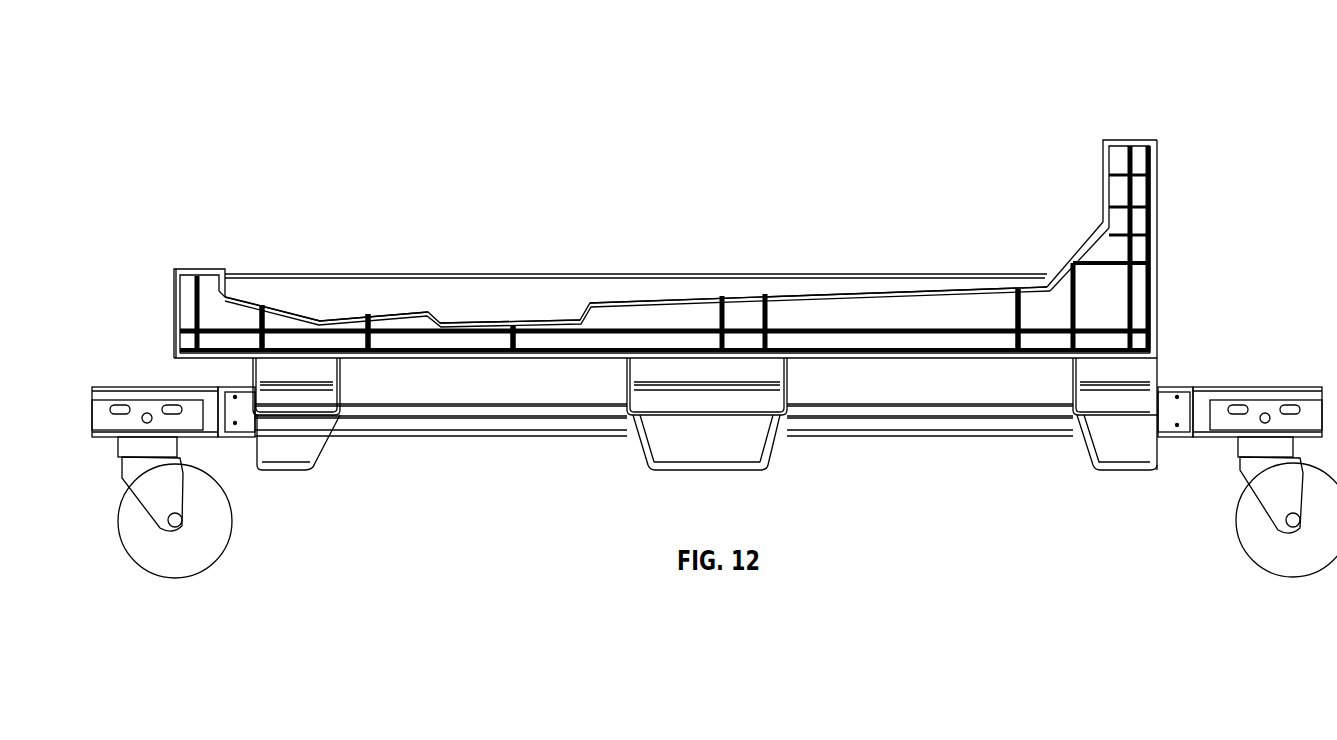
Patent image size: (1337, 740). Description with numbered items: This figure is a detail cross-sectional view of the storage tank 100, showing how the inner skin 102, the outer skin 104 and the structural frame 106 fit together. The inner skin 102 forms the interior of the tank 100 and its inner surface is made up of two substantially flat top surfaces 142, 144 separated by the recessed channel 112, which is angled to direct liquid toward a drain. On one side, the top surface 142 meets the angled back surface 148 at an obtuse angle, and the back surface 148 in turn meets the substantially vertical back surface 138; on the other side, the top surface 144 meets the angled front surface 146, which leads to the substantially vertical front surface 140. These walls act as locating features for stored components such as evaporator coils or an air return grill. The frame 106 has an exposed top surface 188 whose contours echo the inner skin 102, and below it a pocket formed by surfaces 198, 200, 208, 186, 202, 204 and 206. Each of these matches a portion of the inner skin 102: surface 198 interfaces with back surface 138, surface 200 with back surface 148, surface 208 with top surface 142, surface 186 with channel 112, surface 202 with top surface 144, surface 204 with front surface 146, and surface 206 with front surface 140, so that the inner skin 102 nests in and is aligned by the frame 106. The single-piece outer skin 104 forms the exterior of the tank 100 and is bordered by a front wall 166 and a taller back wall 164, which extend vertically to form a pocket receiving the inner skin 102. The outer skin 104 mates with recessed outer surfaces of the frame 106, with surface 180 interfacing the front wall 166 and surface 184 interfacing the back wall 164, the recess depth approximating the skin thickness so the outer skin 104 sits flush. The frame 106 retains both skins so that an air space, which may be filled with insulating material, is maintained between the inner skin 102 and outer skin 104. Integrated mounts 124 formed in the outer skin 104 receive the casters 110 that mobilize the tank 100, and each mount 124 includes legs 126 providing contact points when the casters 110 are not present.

The tank 100 is at (856, 56).
The inner skin 102 is at (692, 290).
The outer skin 104 is at (1157, 185).
The structural frame 106 is at (440, 290).
The casters 110 is at (1273, 387).
The channel 112 is at (543, 322).
The mounts 124 is at (943, 425).
The legs 126 is at (1093, 458).
The back surface 138 is at (1103, 178).
The front surface 140 is at (240, 292).
The top surface 142 is at (815, 283).
The top surface 144 is at (393, 312).
The front surface 146 is at (273, 303).
The back surface 148 is at (1067, 250).
The back wall 164 is at (1157, 215).
The front wall 166 is at (175, 300).
The outer surface 180 is at (185, 330).
The outer surface 184 is at (1150, 248).
The surface 186 is at (545, 335).
The top surface 188 is at (520, 275).
The surface 198 is at (1117, 162).
The surface 200 is at (1097, 238).
The surface 202 is at (395, 330).
The surface 204 is at (297, 322).
The surface 206 is at (215, 287).
The surface 208 is at (953, 292).